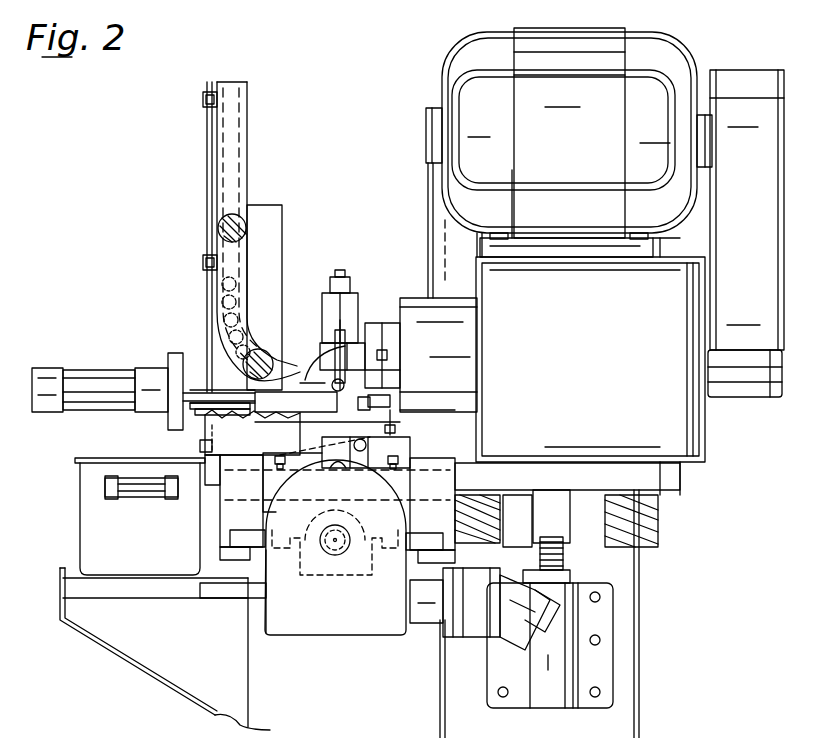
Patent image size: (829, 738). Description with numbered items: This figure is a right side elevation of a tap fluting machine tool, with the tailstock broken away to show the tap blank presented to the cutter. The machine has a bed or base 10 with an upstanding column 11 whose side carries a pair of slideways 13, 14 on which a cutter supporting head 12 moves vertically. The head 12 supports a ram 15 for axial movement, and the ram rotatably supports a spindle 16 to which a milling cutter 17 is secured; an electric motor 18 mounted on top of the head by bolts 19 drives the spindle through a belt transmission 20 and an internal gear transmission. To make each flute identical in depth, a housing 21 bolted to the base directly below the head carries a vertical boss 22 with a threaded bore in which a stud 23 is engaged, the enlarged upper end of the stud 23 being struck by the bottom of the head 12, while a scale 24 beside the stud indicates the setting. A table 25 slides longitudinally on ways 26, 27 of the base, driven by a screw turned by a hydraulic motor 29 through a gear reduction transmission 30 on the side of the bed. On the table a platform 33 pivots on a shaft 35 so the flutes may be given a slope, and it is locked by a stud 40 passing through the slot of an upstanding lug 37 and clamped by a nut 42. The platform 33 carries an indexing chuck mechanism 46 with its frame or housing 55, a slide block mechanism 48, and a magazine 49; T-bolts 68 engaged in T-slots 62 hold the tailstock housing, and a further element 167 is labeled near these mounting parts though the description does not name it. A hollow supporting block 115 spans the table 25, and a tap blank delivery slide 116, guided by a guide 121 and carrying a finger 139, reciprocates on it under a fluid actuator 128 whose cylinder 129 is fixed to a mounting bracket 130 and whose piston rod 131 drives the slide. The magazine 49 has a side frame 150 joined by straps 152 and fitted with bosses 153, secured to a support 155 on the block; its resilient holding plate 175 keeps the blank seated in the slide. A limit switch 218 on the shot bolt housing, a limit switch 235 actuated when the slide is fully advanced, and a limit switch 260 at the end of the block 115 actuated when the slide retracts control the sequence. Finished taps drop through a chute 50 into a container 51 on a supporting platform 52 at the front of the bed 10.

The bed or base 10 is at (636, 722).
The column 11 is at (430, 240).
The cutter supporting head 12 is at (688, 440).
The slideway 13 is at (477, 525).
The slideway 14 is at (660, 522).
The ram 15 is at (467, 333).
The spindle 16 is at (387, 320).
The milling cutter 17 is at (345, 338).
The electric motor 18 is at (612, 35).
The bolts 19 is at (505, 238).
The belt transmission 20 is at (742, 72).
The housing 21 is at (594, 700).
The vertical boss 22 is at (547, 700).
The stud 23 is at (563, 566).
The scale 24 is at (518, 520).
The table 25 is at (232, 515).
The way 26 is at (266, 537).
The way 27 is at (415, 535).
The hydraulic motor 29 is at (472, 640).
The gear reduction transmission 30 is at (375, 633).
The platform 33 is at (410, 482).
The shaft 35 is at (458, 482).
The upstanding lug 37 is at (235, 498).
The stud 40 is at (215, 485).
The nut 42 is at (335, 507).
The indexing chuck mechanism 46 is at (336, 270).
The slide block mechanism 48 is at (193, 360).
The magazine 49 is at (118, 172).
The chute 50 is at (200, 447).
The container 51 is at (80, 538).
The supporting platform 52 is at (63, 594).
The frame or housing 55 is at (310, 372).
The T-slots 62 is at (285, 465).
The T-bolts 68 is at (312, 445).
The supporting block 115 is at (252, 432).
The tap blank delivery slide 116 is at (325, 438).
The guide 121 is at (205, 425).
The fluid actuator 128 is at (75, 328).
The cylinder 129 is at (110, 370).
The mounting bracket 130 is at (175, 355).
The piston rod 131 is at (232, 398).
The finger 139 is at (343, 390).
The side frame 150 is at (250, 140).
The bars or straps 152 is at (210, 100).
The bosses 153 is at (218, 230).
The support 155 is at (283, 218).
The post 167 is at (403, 422).
The resilient holding plate 175 is at (312, 370).
The limit switch 218 is at (330, 322).
The limit switch 235 is at (388, 395).
The limit switch 260 is at (175, 412).